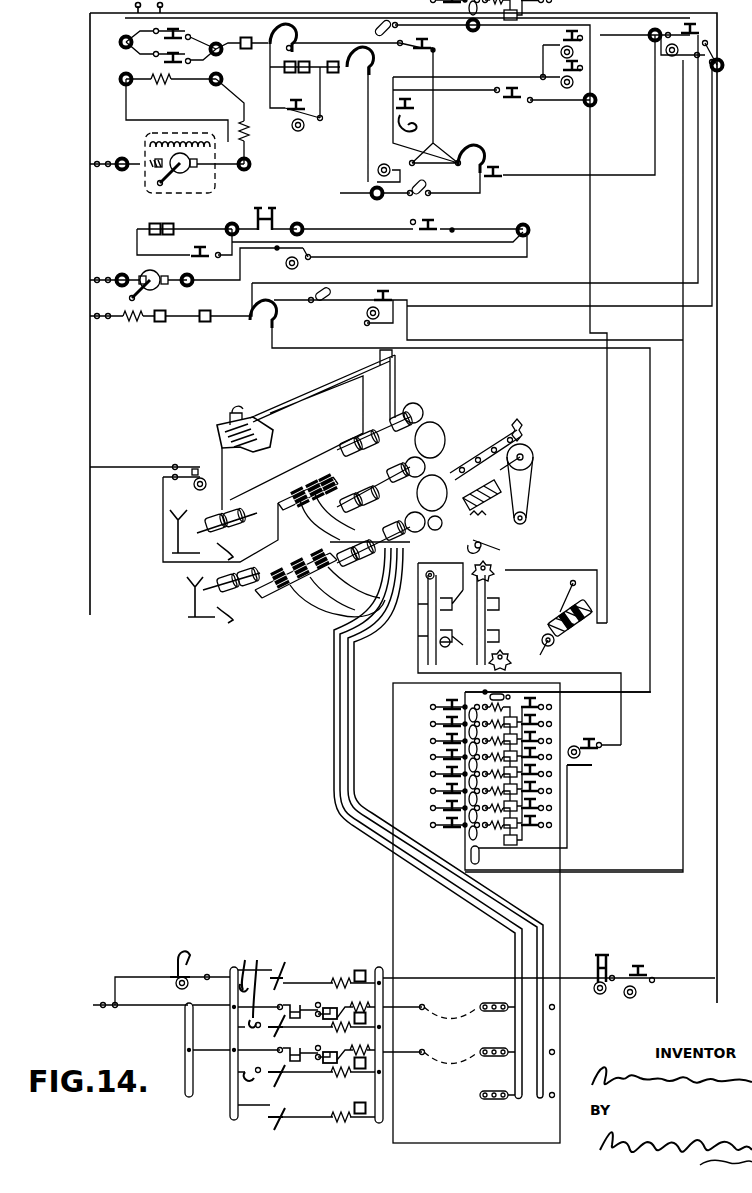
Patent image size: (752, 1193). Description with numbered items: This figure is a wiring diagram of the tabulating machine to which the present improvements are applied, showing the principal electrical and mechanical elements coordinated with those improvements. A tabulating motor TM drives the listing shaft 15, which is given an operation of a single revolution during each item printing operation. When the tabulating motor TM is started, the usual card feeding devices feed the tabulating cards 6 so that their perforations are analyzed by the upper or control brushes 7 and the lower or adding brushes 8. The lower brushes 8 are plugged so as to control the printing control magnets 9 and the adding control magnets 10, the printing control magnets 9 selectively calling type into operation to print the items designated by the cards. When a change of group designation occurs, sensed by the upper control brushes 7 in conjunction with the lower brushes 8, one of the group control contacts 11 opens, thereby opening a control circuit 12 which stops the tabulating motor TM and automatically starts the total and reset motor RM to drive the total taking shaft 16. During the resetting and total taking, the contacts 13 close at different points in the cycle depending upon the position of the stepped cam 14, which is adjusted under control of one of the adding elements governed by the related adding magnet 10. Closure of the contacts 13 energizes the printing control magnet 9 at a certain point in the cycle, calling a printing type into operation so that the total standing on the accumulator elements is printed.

The tabulating cards 6 is at (222, 451).
The upper or control brushes 7 is at (318, 490).
The lower or adding brushes 8 is at (332, 560).
The printing control magnets 9 is at (358, 970).
The adding control magnets 10 is at (323, 1008).
The group control contacts 11 is at (430, 740).
The control circuit 12 is at (405, 330).
The contacts 13 is at (282, 975).
The stepped cam 14 is at (215, 1100).
The listing shaft 15 is at (150, 181).
The total taking shaft 16 is at (146, 288).
The tabulating motor TM is at (200, 172).
The total and reset motor RM is at (168, 287).